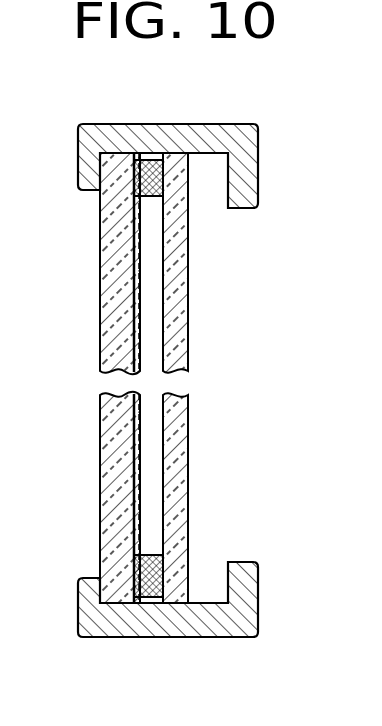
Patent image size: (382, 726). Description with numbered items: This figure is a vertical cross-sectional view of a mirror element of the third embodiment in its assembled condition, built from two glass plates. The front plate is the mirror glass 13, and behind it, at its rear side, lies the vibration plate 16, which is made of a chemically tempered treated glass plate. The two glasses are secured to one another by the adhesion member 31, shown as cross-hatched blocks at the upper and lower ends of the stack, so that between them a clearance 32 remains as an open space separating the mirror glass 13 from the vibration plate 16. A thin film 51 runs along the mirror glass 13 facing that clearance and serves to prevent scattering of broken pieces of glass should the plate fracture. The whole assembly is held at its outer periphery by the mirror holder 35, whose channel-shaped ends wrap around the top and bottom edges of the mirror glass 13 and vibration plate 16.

The mirror holder 35 is at (207, 130).
The mirror glass 13 is at (108, 227).
The thin film 51 is at (135, 288).
The vibration plate 16 is at (175, 302).
The adhesion member 31 is at (163, 180).
The clearance 32 is at (150, 488).